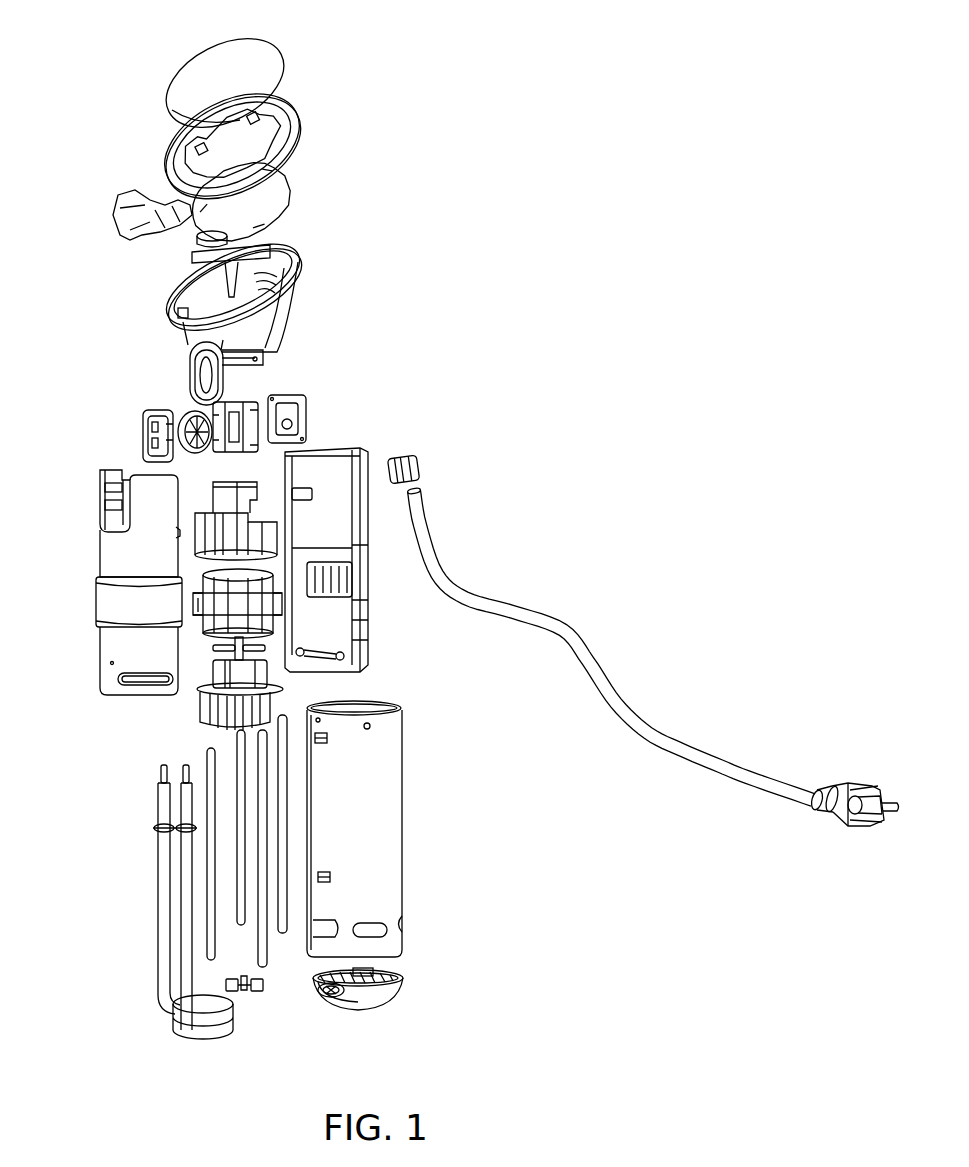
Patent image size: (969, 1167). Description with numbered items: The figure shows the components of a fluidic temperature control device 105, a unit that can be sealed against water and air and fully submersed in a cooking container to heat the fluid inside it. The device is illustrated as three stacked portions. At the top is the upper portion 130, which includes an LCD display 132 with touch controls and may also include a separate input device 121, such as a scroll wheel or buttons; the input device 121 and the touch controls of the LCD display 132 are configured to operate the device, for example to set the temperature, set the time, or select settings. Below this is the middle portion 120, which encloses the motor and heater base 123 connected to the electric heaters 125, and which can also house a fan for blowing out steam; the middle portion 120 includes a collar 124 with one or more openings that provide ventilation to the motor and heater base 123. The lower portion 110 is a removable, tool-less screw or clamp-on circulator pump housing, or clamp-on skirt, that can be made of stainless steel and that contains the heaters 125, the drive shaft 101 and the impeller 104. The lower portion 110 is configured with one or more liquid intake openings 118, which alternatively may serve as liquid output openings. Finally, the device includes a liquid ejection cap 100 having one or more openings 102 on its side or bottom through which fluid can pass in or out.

The fluidic temperature control device 105 is at (133, 30).
The LCD display 132 is at (268, 57).
The upper portion 130 is at (277, 310).
The input device 121 is at (185, 413).
The middle portion 120 is at (358, 450).
The collar 124 is at (98, 603).
The motor and heater base 123 is at (212, 607).
The heaters 125 is at (202, 1035).
The drive shaft 101 is at (241, 928).
The impeller 104 is at (250, 993).
The lower portion 110 is at (395, 833).
The liquid intake openings 118 is at (403, 925).
The liquid ejection cap 100 is at (390, 990).
The openings 102 is at (337, 1003).